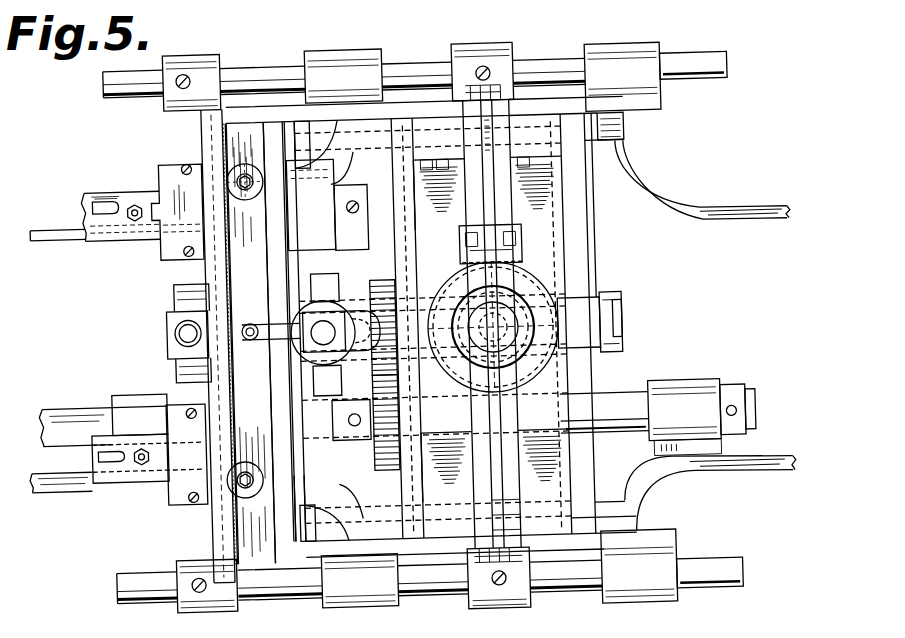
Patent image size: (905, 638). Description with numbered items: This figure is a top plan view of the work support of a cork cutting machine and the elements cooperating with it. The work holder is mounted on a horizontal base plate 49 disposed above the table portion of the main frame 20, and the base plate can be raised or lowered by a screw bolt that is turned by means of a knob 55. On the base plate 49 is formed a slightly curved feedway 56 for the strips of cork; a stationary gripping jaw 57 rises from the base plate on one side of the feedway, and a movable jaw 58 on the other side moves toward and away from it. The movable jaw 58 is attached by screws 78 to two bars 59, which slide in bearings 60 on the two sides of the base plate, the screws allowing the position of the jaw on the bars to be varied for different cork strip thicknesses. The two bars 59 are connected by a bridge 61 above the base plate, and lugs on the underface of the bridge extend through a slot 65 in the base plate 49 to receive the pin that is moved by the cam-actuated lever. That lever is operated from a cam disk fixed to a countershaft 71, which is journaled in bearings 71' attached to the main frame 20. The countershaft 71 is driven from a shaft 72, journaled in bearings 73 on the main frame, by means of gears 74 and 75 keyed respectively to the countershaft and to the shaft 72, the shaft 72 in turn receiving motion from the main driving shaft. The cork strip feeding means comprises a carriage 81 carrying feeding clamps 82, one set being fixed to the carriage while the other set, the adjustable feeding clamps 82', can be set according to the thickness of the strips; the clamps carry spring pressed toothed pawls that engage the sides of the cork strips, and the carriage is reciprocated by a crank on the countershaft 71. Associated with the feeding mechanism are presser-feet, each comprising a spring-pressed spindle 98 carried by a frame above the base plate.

The main frame 20 is at (751, 215).
The base plate 49 is at (541, 101).
The knob 55 is at (546, 301).
The feedway 56 is at (252, 545).
The stationary gripping jaw 57 is at (296, 520).
The movable jaw 58 is at (208, 503).
The bars 59 is at (713, 60).
The bearings 60 is at (352, 54).
The bridge 61 is at (510, 416).
The slot 65 is at (524, 239).
The countershaft 71 is at (609, 321).
The bearings 71' is at (639, 328).
The shaft 72 is at (618, 404).
The bearings 73 is at (692, 388).
The gear 74 is at (381, 279).
The gear 75 is at (373, 377).
The screws 78 is at (191, 67).
The carriage 81 is at (112, 230).
The feeding clamps 82 is at (327, 191).
The adjustable feeding clamps 82' is at (165, 215).
The spring-pressed spindle 98 is at (245, 193).